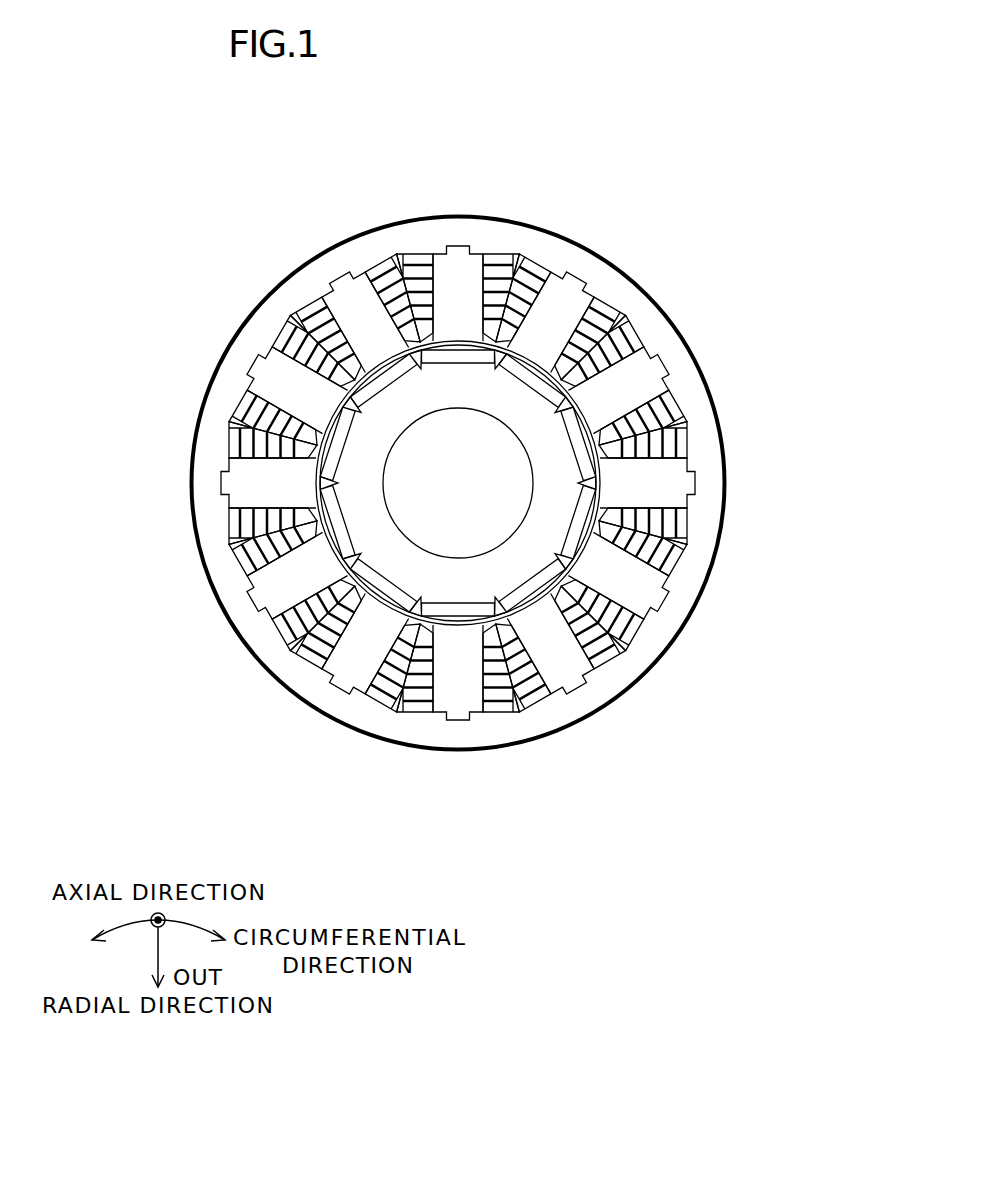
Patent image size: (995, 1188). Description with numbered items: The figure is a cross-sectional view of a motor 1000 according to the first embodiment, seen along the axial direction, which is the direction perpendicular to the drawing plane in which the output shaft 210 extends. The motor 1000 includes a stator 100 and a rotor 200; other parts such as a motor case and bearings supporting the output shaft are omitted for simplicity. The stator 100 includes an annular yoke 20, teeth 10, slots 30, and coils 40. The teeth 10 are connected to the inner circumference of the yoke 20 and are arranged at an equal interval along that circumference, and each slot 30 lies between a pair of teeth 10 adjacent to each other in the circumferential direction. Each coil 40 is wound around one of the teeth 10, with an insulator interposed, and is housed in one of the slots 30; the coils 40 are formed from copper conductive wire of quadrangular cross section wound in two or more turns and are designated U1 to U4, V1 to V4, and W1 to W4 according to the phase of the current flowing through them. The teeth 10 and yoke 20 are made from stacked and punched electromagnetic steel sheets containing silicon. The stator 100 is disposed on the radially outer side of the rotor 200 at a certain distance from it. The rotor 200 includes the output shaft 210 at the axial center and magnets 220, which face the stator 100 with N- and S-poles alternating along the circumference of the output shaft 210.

The motor 1000 is at (191, 180).
The stator 100 is at (668, 108).
The teeth 10 is at (441, 270).
The annular yoke 20 is at (408, 238).
The slots 30 is at (544, 257).
The coils 40 is at (504, 254).
The rotor 200 is at (350, 483).
The output shaft 210 is at (458, 483).
The magnets 220 is at (390, 380).